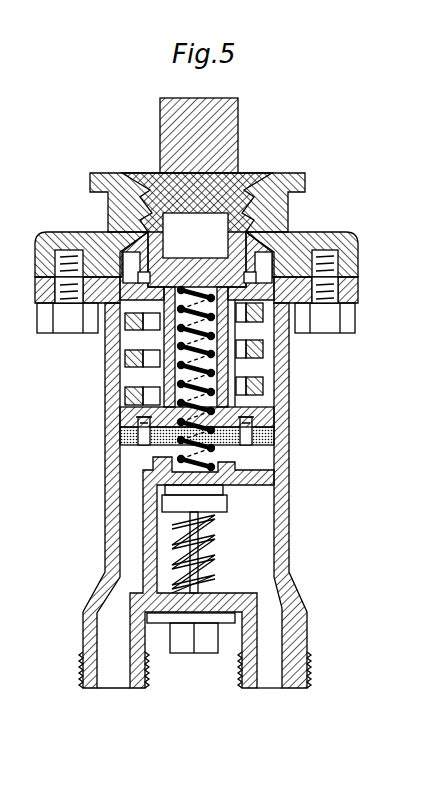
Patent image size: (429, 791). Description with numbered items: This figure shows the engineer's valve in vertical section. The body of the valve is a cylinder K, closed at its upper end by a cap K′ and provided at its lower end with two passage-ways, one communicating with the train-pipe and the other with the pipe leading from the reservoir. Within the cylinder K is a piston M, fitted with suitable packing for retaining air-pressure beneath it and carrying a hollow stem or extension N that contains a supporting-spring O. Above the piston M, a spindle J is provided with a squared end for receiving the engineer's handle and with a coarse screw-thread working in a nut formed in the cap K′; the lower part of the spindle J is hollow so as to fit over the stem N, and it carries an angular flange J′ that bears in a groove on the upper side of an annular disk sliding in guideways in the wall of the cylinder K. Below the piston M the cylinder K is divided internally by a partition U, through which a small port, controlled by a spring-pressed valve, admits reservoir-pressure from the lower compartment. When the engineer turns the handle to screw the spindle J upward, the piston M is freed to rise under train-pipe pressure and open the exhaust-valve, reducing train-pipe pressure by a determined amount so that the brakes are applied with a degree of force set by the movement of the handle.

The spindle J is at (205, 135).
The angular flange J′ is at (257, 253).
The cap K′ is at (356, 250).
The stem N is at (192, 267).
The cylinder K is at (286, 449).
The piston M is at (268, 410).
The supporting-spring O is at (216, 455).
The partition U is at (237, 476).
The valve Y is at (194, 539).